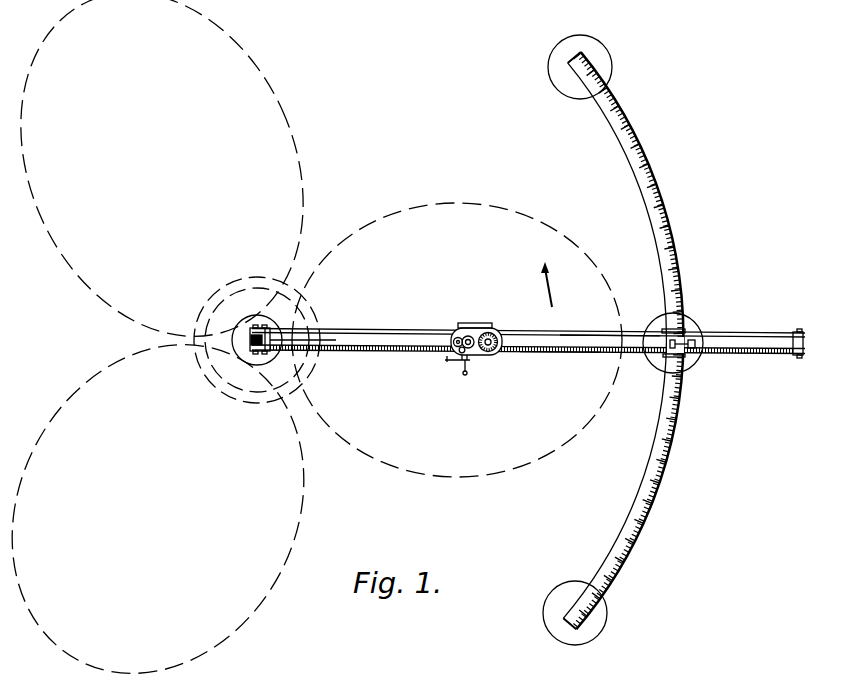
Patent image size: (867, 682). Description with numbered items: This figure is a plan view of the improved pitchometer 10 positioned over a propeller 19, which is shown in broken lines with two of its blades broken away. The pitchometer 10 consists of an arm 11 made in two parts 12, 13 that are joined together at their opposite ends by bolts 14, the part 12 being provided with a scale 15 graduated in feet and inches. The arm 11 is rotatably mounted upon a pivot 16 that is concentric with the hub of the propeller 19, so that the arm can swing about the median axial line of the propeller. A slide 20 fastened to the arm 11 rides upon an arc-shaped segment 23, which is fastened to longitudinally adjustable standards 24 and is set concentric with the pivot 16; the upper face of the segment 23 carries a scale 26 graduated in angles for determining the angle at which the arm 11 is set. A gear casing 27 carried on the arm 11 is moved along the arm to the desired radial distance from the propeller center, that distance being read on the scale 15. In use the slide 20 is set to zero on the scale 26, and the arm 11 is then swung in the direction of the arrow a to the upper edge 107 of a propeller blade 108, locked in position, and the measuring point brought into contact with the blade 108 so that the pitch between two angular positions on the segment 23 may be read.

The pitchometer 10 is at (475, 354).
The arm 11 is at (610, 356).
The arm part 12 is at (395, 354).
The arm part 13 is at (384, 330).
The bolts 14 is at (265, 327).
The scale 15 is at (553, 354).
The pivot 16 is at (252, 340).
The propeller 19 is at (195, 341).
The slide 20 is at (686, 346).
The arc-shaped segment 23 is at (650, 508).
The standards 24 is at (606, 63).
The scale 26 is at (672, 437).
The gear casing 27 is at (474, 331).
The upper edge 107 is at (481, 203).
The propeller blade 108 is at (502, 472).
The arrow a is at (557, 284).